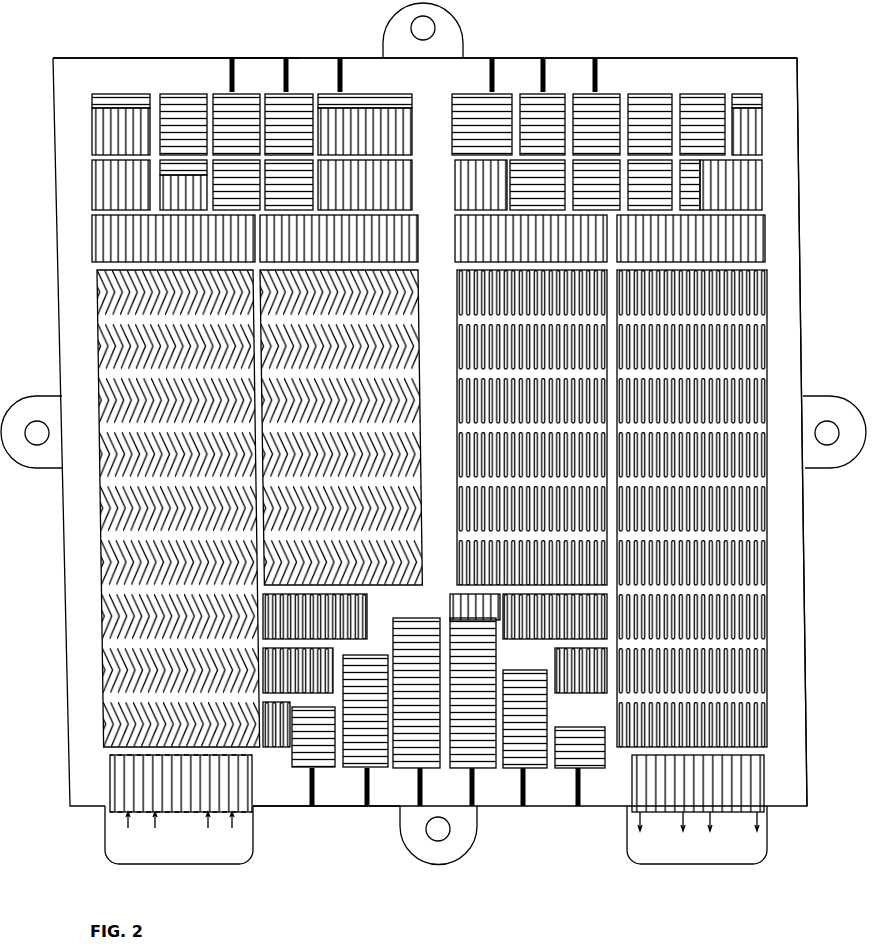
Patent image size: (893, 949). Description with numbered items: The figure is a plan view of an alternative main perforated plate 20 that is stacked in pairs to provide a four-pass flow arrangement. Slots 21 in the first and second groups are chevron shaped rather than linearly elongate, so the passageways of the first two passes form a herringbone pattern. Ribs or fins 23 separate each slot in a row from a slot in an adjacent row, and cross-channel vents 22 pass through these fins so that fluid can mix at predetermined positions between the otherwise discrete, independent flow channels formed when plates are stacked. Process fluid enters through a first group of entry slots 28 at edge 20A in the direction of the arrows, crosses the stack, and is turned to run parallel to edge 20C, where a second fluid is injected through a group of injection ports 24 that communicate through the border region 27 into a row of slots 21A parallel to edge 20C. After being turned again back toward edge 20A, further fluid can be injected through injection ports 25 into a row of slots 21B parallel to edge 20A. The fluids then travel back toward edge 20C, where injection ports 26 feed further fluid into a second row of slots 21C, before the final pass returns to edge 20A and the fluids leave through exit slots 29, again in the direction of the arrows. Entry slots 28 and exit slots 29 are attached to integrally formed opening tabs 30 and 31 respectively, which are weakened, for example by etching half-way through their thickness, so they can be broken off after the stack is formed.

The plate 20 is at (819, 344).
The edge 20A is at (332, 803).
The edge 20C is at (168, 58).
The slots 21 is at (100, 388).
The row of slots 21A is at (224, 96).
The row of slots 21B is at (300, 770).
The second row of slots 21C is at (480, 95).
The cross-channel vents 22 is at (745, 723).
The ribs or fins 23 is at (102, 700).
The injection ports 24 is at (237, 77).
The injection ports 25 is at (370, 790).
The injection ports 26 is at (497, 70).
The border region 27 is at (697, 80).
The entry slots 28 is at (166, 815).
The exit slots 29 is at (664, 804).
The opening tab 30 is at (218, 852).
The opening tab 31 is at (700, 852).